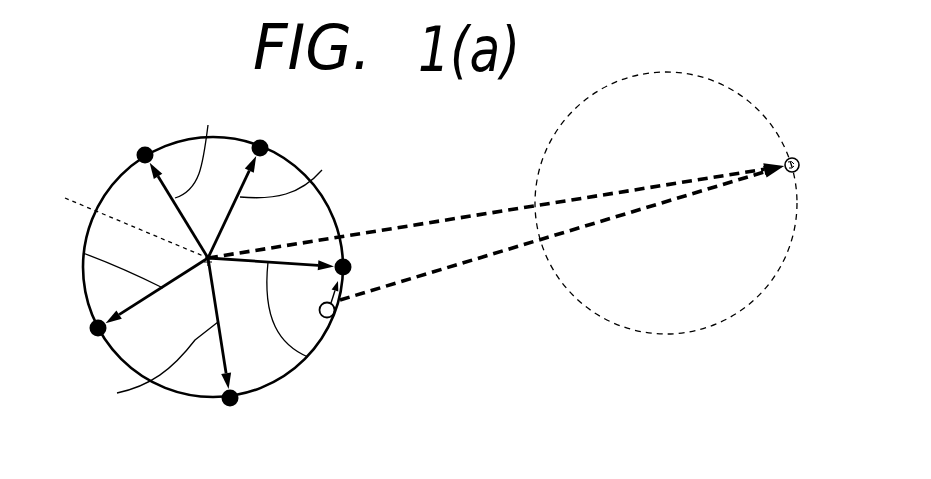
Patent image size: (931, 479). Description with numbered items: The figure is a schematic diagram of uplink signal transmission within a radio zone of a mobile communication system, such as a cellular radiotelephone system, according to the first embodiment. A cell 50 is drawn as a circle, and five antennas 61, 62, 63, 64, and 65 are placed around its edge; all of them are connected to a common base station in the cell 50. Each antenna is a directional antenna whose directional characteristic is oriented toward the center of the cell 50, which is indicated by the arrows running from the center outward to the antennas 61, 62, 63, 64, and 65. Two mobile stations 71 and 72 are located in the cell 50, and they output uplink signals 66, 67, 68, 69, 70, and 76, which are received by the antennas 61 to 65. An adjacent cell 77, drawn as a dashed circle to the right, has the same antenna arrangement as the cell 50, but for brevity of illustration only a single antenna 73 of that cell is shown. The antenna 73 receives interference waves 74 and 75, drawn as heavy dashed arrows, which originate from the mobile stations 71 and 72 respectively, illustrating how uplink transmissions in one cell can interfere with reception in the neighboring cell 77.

The cell 50 is at (188, 400).
The antenna 61 is at (144, 149).
The antenna 62 is at (270, 146).
The antenna 63 is at (348, 262).
The antenna 64 is at (230, 406).
The antenna 65 is at (90, 326).
The uplink signal 66 is at (210, 145).
The uplink signal 67 is at (322, 170).
The uplink signal 68 is at (308, 357).
The uplink signal 69 is at (153, 366).
The uplink signal 70 is at (83, 253).
The mobile station 71 is at (125, 211).
The mobile station 72 is at (334, 317).
The antenna 73 is at (808, 156).
The interference wave 74 is at (451, 217).
The interference wave 75 is at (462, 262).
The uplink signal 76 is at (342, 300).
The adjacent cell 77 is at (692, 330).